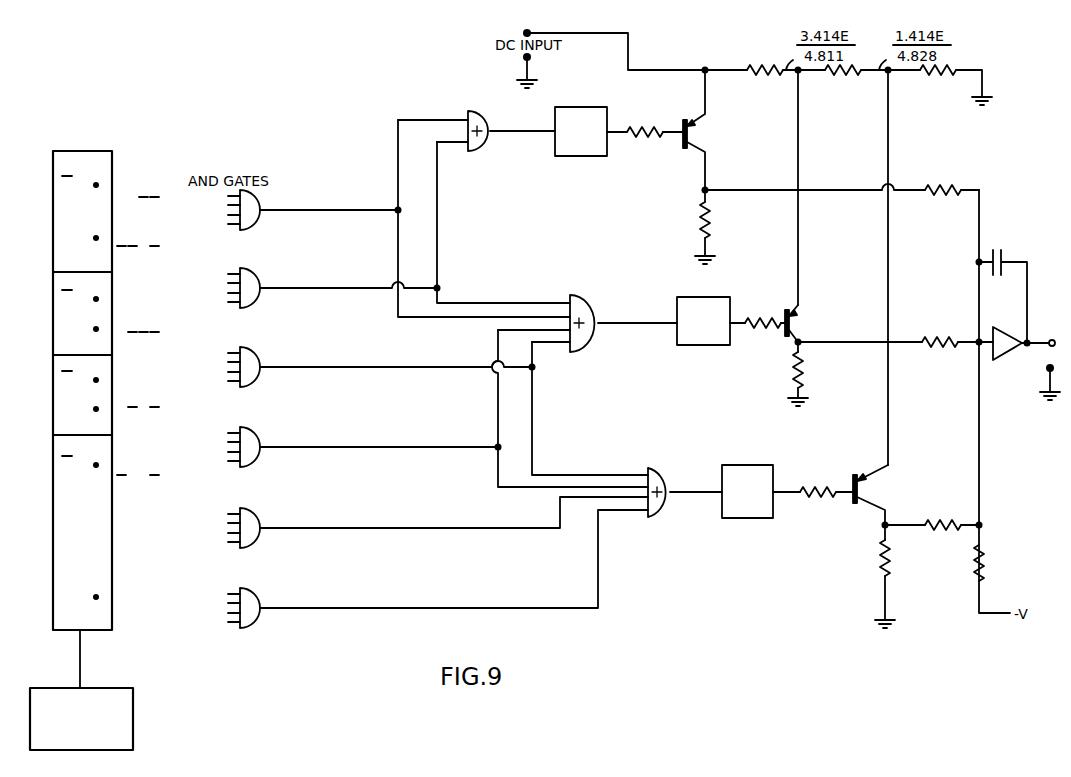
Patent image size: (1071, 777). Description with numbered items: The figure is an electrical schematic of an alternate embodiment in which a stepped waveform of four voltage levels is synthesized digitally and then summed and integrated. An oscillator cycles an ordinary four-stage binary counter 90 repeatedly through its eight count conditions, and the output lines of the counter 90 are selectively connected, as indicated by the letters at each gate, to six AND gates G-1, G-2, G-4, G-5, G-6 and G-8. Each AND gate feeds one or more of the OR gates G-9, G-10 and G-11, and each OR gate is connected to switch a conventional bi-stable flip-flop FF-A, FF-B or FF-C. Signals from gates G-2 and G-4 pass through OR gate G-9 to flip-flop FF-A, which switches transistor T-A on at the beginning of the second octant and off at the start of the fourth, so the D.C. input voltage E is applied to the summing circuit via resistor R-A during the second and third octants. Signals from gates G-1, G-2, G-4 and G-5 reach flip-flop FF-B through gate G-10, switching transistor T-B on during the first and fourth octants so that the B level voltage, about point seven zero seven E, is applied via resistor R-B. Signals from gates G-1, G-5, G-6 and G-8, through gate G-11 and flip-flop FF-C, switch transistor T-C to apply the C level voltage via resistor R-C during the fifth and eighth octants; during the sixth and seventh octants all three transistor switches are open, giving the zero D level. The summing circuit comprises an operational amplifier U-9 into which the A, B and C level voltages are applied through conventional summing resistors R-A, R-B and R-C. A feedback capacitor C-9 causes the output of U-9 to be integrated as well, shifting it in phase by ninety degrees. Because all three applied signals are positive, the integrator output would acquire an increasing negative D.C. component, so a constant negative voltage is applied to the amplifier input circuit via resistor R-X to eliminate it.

The four-stage binary counter 90 is at (78, 151).
The AND gate G-2 is at (257, 195).
The AND gate G-4 is at (255, 272).
The AND gate G-1 is at (255, 352).
The AND gate G-5 is at (255, 432).
The AND gate G-6 is at (255, 513).
The AND gate G-8 is at (255, 593).
The OR gate G-9 is at (481, 110).
The OR gate G-10 is at (582, 294).
The OR gate G-11 is at (655, 468).
The bi-stable flip-flop FF-A is at (581, 131).
The bi-stable flip-flop FF-B is at (703, 321).
The bi-stable flip-flop FF-C is at (747, 491).
The transistor switch T-A is at (698, 134).
The transistor switch T-B is at (777, 355).
The transistor switch T-C is at (834, 546).
The D.C. input voltage E is at (705, 66).
The summing resistor R-A is at (963, 185).
The summing resistor R-B is at (963, 338).
The summing resistor R-C is at (925, 508).
The resistor R-X is at (985, 545).
The feedback capacitor C-9 is at (1017, 250).
The operational amplifier U-9 is at (998, 358).